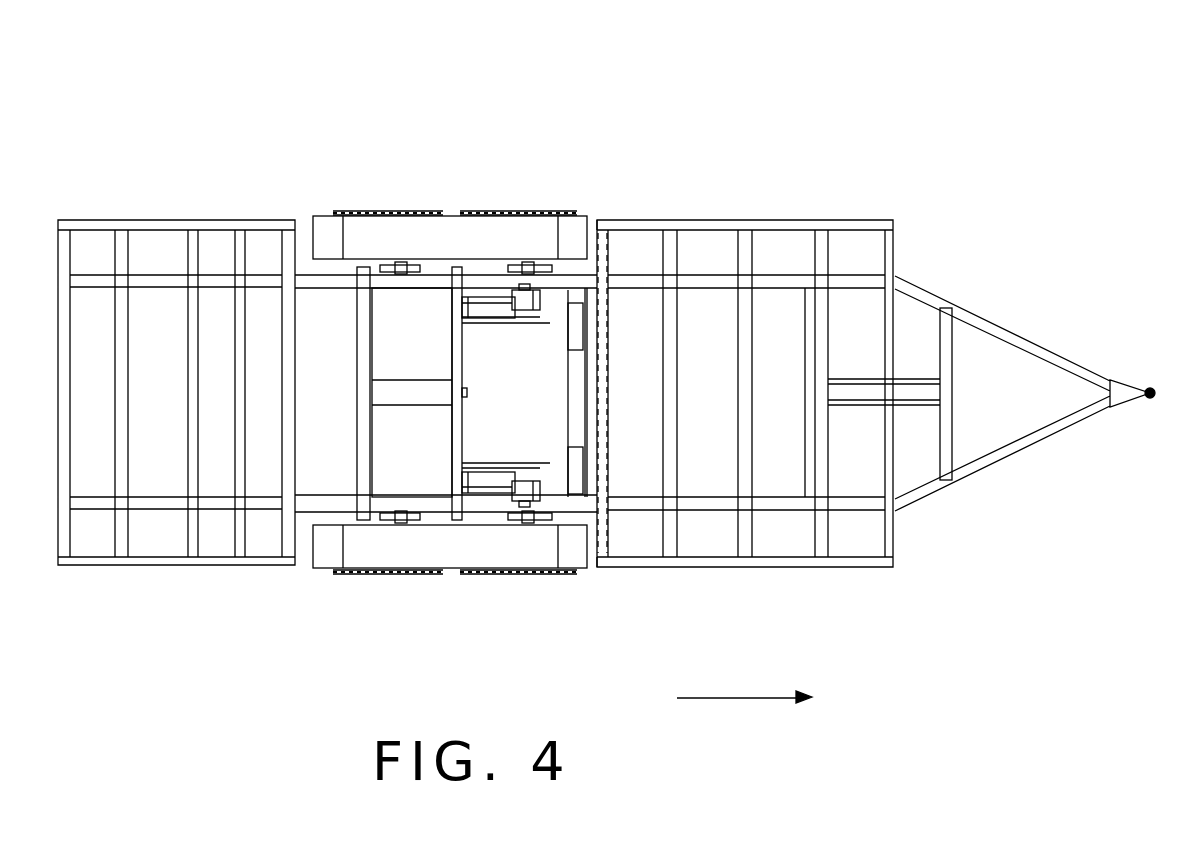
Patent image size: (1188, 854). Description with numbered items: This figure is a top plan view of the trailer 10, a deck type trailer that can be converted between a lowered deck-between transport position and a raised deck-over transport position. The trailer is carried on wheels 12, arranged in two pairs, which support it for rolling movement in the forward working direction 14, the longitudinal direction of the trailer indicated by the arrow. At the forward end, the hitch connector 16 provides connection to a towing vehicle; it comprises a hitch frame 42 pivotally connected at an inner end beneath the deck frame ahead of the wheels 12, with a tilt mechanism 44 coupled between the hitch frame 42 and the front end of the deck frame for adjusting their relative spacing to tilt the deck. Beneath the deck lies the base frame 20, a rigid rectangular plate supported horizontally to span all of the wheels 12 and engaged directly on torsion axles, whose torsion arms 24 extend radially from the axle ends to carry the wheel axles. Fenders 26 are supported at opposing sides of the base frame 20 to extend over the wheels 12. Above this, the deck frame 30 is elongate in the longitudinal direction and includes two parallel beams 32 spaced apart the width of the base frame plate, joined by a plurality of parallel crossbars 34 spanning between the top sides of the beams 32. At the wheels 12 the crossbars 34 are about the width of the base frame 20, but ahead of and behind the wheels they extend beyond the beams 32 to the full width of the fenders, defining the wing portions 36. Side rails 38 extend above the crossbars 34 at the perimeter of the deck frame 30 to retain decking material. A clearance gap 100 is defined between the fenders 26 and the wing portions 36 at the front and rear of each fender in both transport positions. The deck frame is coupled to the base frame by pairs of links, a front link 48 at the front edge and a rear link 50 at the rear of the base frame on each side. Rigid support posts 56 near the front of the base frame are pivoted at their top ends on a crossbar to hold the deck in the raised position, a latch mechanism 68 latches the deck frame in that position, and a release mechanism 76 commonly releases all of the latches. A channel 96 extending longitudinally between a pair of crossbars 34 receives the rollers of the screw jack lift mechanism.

The trailer 10 is at (796, 121).
The wheels 12 is at (383, 212).
The forward working direction 14 is at (733, 698).
The hitch connector 16 is at (1120, 382).
The base frame 20 is at (547, 414).
The torsion arms 24 is at (404, 518).
The fenders 26 is at (463, 550).
The deck frame 30 is at (147, 221).
The beams 32 is at (700, 283).
The crossbars 34 is at (190, 533).
The wing portions 36 is at (892, 207).
The side rails 38 is at (220, 220).
The hitch frame 42 is at (1000, 452).
The tilt mechanism 44 is at (862, 397).
The front link 48 is at (549, 288).
The rear link 50 is at (343, 272).
The support posts 56 is at (472, 477).
The latch mechanism 68 is at (514, 325).
The release mechanism 76 is at (592, 364).
The channel 96 is at (407, 394).
The clearance gap 100 is at (304, 226).